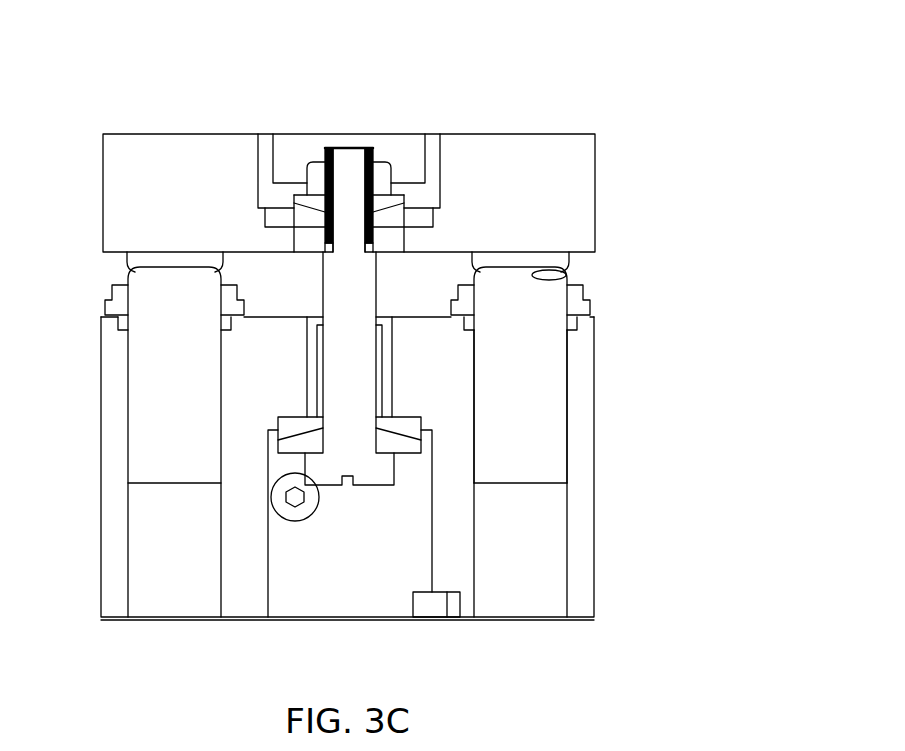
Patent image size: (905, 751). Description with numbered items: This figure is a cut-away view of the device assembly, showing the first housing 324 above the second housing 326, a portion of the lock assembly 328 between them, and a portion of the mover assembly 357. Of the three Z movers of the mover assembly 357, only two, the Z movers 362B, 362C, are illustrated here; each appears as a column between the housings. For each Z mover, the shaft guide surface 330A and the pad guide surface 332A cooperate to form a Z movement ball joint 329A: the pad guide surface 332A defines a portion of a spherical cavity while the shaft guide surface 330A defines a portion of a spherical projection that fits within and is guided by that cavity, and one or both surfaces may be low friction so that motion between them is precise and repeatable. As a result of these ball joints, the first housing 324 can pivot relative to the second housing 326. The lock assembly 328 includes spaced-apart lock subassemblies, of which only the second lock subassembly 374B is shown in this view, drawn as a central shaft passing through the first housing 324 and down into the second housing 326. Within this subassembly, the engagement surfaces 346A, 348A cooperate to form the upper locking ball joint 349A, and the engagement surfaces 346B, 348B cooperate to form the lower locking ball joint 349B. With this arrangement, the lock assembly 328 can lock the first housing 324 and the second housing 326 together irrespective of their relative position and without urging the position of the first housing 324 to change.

The first housing 324 is at (590, 163).
The second housing 326 is at (595, 562).
The lock assembly 328 is at (350, 148).
The second lock subassembly 374B is at (341, 146).
The engagement surface 346A is at (386, 210).
The engagement surface 348A is at (405, 210).
The upper locking ball joint 349A is at (480, 118).
The Z movement ball joint 329A is at (652, 422).
The shaft guide surface 330A is at (535, 279).
The pad guide surface 332A is at (547, 264).
The mover assembly 357 is at (556, 405).
The Z mover 362B is at (147, 450).
The Z mover 362C is at (557, 474).
The engagement surface 346B is at (398, 435).
The engagement surface 348B is at (400, 440).
The lower locking ball joint 349B is at (553, 462).